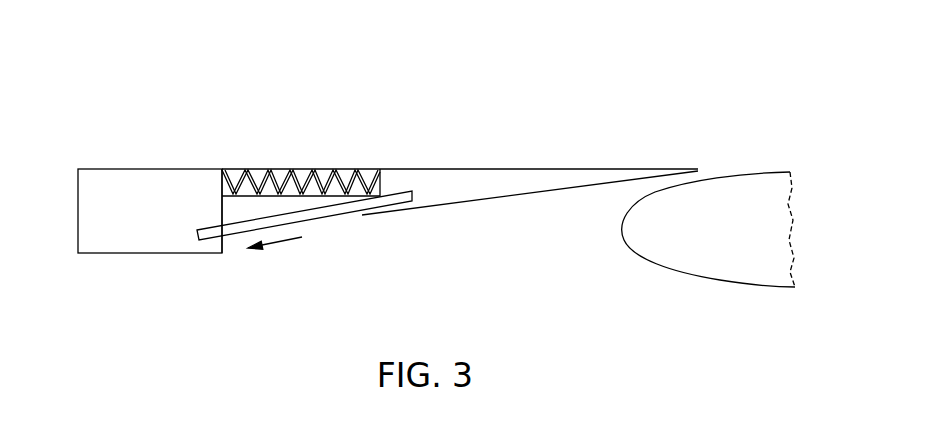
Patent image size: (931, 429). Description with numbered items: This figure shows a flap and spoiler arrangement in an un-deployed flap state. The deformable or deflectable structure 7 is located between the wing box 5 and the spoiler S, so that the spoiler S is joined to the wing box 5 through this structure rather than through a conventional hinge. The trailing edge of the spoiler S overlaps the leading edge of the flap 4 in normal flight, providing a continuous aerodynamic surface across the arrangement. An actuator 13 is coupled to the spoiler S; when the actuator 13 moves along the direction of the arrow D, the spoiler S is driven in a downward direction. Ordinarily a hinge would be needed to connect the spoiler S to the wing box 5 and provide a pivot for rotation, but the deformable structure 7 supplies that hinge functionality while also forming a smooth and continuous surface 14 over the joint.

The flap 4 is at (731, 198).
The wing box 5 is at (140, 186).
The deformable or deflectable structure 7 is at (322, 170).
The actuator 13 is at (355, 208).
The smooth and continuous surface 14 is at (357, 170).
The spoiler S is at (491, 180).
The arrow direction D is at (275, 255).